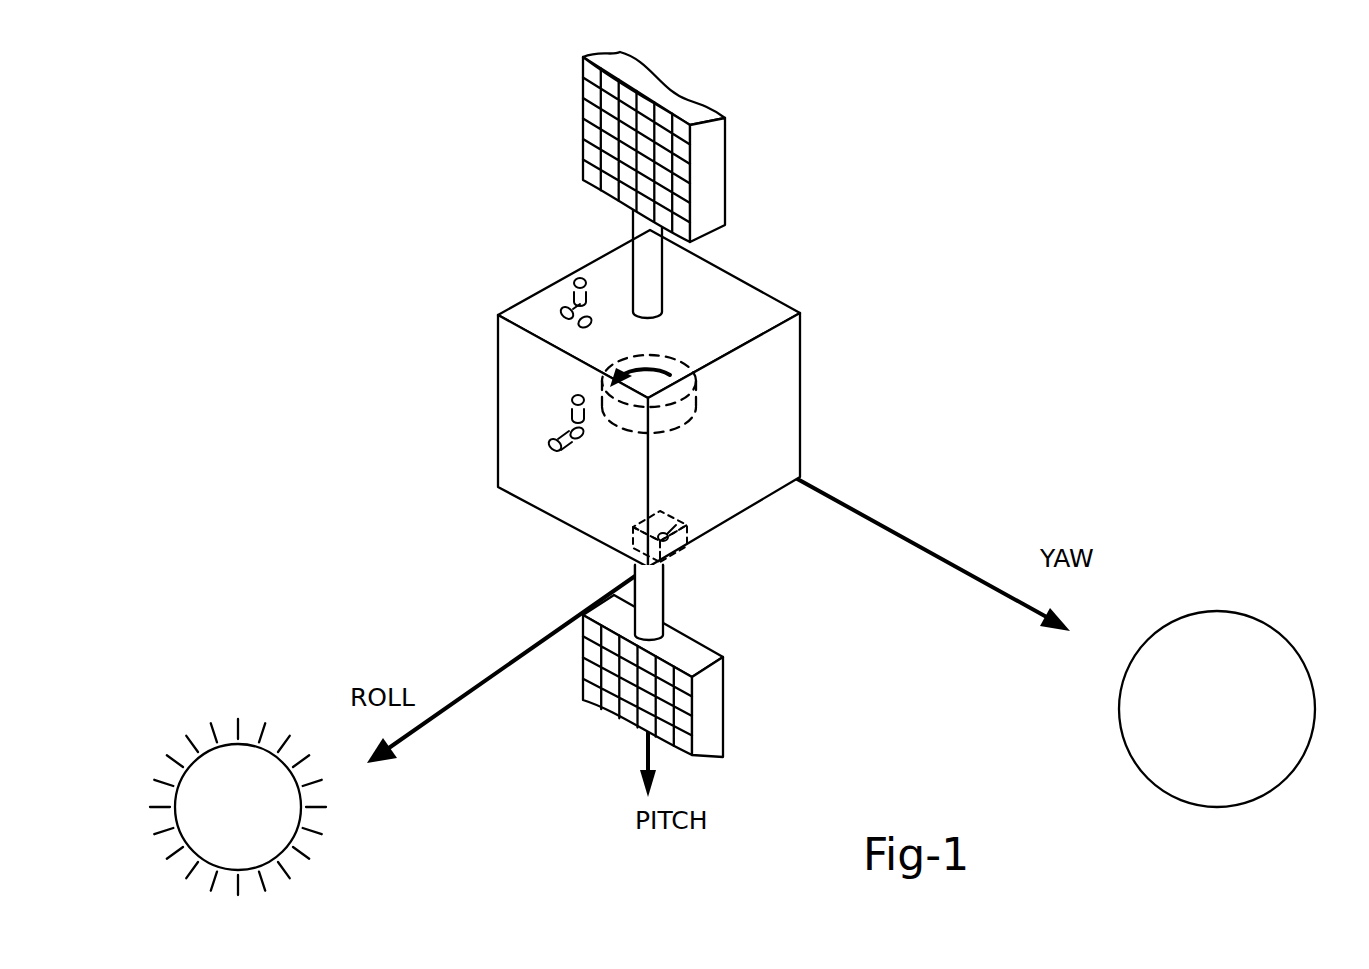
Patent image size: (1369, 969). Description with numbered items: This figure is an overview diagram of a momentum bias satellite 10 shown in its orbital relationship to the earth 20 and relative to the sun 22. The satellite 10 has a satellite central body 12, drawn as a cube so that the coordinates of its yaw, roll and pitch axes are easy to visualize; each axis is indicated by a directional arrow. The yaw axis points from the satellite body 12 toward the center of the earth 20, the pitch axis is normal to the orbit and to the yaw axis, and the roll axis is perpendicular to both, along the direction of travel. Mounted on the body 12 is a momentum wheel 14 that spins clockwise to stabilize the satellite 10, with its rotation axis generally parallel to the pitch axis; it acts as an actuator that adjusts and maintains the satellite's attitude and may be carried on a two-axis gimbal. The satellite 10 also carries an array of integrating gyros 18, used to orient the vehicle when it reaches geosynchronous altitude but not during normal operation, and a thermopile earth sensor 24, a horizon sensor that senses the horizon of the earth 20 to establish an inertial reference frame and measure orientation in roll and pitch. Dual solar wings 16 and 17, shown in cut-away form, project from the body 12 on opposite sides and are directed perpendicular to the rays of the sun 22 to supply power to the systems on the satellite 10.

The momentum bias satellite 10 is at (878, 246).
The satellite central body 12 is at (800, 388).
The momentum wheel 14 is at (668, 404).
The solar wing 16 is at (680, 118).
The solar wing 17 is at (723, 710).
The integrating gyros 18 is at (562, 428).
The earth 20 is at (1223, 612).
The sun 22 is at (215, 723).
The thermopile earth sensor 24 is at (677, 507).